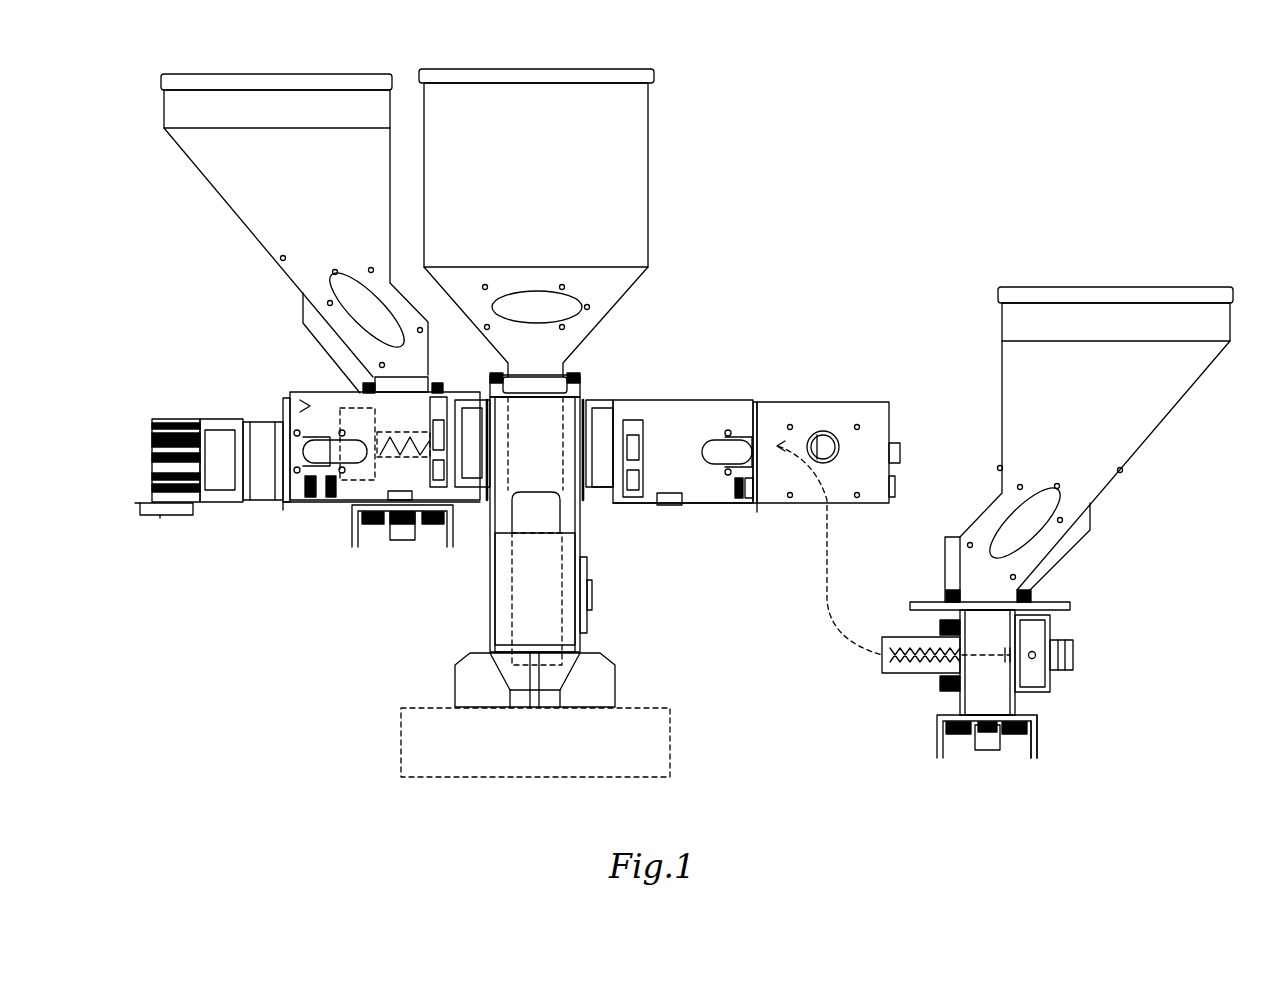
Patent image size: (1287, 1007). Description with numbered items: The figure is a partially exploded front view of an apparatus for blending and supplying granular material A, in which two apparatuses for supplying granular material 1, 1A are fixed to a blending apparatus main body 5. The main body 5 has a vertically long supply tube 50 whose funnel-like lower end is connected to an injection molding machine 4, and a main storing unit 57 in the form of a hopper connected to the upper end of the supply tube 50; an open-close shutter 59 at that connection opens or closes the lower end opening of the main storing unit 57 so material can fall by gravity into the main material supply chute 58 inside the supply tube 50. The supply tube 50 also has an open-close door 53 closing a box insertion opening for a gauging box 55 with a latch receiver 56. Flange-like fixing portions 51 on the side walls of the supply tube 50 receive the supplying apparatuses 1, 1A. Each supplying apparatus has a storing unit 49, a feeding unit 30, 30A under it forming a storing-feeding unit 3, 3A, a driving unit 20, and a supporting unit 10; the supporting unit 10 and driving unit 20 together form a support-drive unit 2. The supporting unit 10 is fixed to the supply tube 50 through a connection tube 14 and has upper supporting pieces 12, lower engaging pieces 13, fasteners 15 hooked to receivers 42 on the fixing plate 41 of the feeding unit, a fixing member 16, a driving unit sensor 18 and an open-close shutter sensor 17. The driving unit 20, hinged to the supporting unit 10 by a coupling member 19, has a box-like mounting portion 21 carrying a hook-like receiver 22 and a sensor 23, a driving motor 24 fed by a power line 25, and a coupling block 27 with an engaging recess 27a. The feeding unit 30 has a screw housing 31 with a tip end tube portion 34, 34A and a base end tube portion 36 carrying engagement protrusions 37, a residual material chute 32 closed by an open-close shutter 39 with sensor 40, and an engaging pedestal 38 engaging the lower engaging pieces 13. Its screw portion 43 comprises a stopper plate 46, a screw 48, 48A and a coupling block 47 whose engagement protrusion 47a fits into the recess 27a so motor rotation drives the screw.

The apparatus for supplying granular material 1 is at (955, 228).
The apparatus for supplying granular material 1A is at (178, 222).
The support-drive unit 2 is at (800, 303).
The storing-feeding unit 3 is at (1148, 415).
The storing-feeding unit 3A is at (248, 212).
The injection molding machine 4 is at (412, 708).
The blending apparatus main body 5 is at (699, 118).
The supporting unit 10 is at (728, 358).
The upper supporting piece 12 is at (330, 392).
The lower engaging piece 13 is at (350, 505).
The connection tube 14 is at (470, 400).
The fixing member (fastening member) 15 is at (435, 470).
The fixing member 16 is at (330, 450).
The open-close shutter sensor 17 is at (400, 500).
The driving unit sensor 18 is at (325, 500).
The coupling member 19 is at (755, 402).
The driving unit 20 is at (800, 358).
The mounting portion 21 is at (290, 503).
The hook-like receiver 22 is at (290, 450).
The driving unit sensor 23 is at (290, 498).
The driving motor 24 is at (200, 419).
The power line 25 is at (165, 515).
The coupling block 27 is at (823, 424).
The engaging recess 27a is at (825, 431).
The feeding unit 30 is at (987, 668).
The feeding unit 30A is at (310, 395).
The screw housing 31 is at (1013, 668).
The residual material chute 32 is at (1030, 758).
The tip end tube portion 34 is at (892, 637).
The tip end tube portion 34A is at (513, 365).
The base end tube portion 36 is at (1040, 615).
The engagement protrusion 37 is at (1012, 700).
The engaging pedestal 38 is at (724, 654).
The open-close shutter 39 is at (400, 540).
The open-close shutter sensor 40 is at (412, 530).
The fixing plate 41 is at (945, 598).
The hook-like receiver 42 is at (957, 592).
The screw portion 43 is at (1050, 626).
The stopper plate 46 is at (1083, 652).
The coupling block 47 is at (1060, 668).
The engagement protrusion 47a is at (1073, 655).
The screw 48 is at (975, 660).
The screw 48A is at (420, 380).
The storing unit 49 is at (697, 332).
The supply tube 50 is at (542, 573).
The fixing portion 51 is at (487, 500).
The open-close door 53 is at (587, 615).
The gauging box 55 is at (575, 665).
The latch receiver 56 is at (592, 560).
The main storing unit 57 is at (476, 90).
The main material supply chute 58 is at (495, 665).
The open-close shutter 59 is at (520, 377).
The apparatus for blending and supplying granular material A is at (1164, 110).